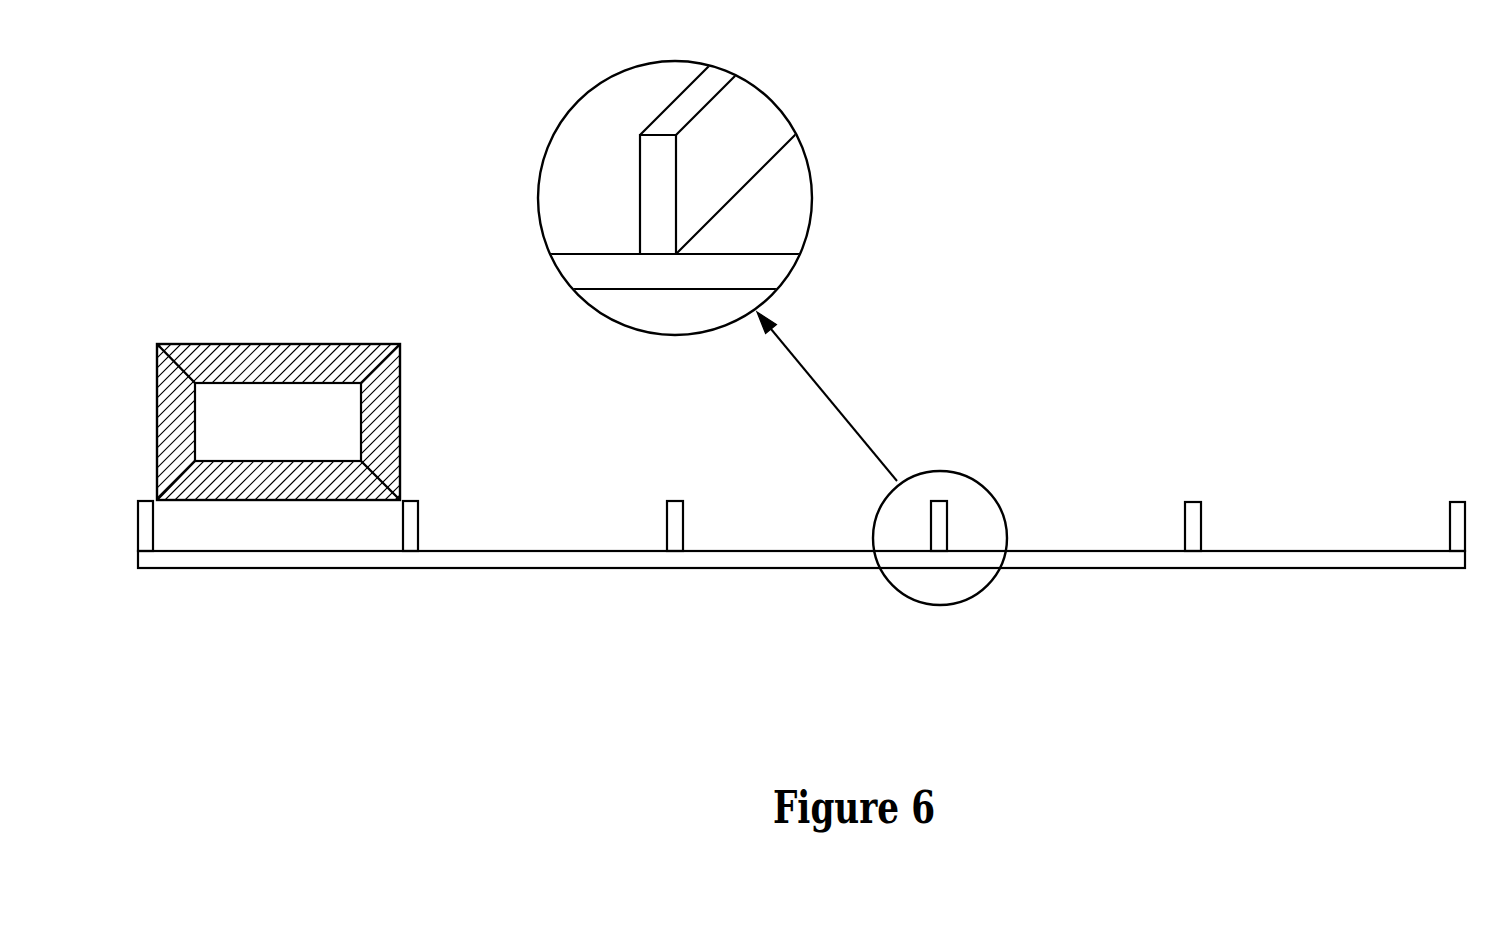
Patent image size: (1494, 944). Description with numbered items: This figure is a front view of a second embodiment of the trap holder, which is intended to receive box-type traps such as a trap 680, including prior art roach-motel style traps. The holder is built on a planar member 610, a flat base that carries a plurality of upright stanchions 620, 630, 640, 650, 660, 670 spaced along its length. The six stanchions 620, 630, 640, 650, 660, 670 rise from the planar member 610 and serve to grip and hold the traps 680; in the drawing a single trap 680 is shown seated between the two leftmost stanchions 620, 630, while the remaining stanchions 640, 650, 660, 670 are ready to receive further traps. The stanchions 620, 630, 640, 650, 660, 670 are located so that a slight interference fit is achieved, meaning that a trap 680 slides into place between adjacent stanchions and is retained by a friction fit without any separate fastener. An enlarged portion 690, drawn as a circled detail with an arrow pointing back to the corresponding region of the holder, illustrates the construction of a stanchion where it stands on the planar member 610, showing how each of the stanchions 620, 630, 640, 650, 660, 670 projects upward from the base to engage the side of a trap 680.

The planar member 610 is at (1087, 551).
The stanchion 620 is at (153, 528).
The stanchion 630 is at (418, 528).
The stanchion 640 is at (683, 528).
The stanchion 650 is at (947, 528).
The stanchion 660 is at (1201, 530).
The stanchion 670 is at (1465, 530).
The trap 680 is at (313, 344).
The enlarged portion 690 is at (771, 97).